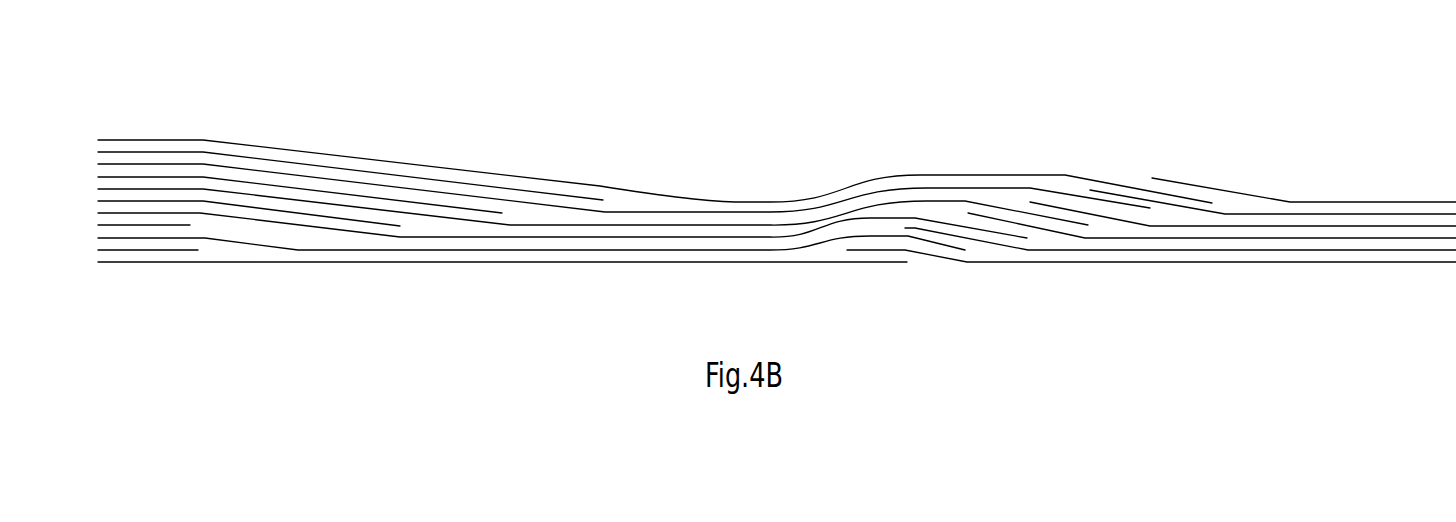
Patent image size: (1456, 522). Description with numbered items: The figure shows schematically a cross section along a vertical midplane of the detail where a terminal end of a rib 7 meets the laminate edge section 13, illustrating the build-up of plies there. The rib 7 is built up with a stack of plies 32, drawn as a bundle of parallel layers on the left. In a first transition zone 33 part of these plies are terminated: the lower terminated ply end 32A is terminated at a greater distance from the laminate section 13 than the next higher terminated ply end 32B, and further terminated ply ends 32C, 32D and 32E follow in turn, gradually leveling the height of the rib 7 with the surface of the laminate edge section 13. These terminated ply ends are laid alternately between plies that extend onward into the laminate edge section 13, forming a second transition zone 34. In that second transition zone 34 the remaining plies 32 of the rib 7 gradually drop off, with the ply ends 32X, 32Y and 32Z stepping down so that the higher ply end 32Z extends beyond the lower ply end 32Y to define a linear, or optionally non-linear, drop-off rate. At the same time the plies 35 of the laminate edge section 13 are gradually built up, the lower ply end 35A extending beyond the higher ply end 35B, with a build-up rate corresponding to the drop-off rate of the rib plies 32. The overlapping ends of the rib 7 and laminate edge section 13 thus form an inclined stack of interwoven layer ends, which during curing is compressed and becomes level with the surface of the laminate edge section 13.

The rib 7 is at (167, 145).
The laminate edge section 13 is at (1410, 208).
The plies 32 is at (170, 201).
The lower terminated ply end 32A is at (198, 250).
The next higher terminated ply end 32B is at (298, 238).
The terminated ply end 32C is at (400, 226).
The terminated ply end 32D is at (502, 213).
The terminated ply end 32E is at (603, 200).
The ply end 32X is at (965, 250).
The lower ply end 32Y is at (1028, 238).
The higher ply end 32Z is at (1088, 225).
The first transition zone 33 is at (449, 147).
The second transition zone 34 is at (991, 157).
The plies of the laminate edge section 35 is at (1272, 220).
The lower ply end 35A is at (850, 250).
The higher ply end 35B is at (912, 228).